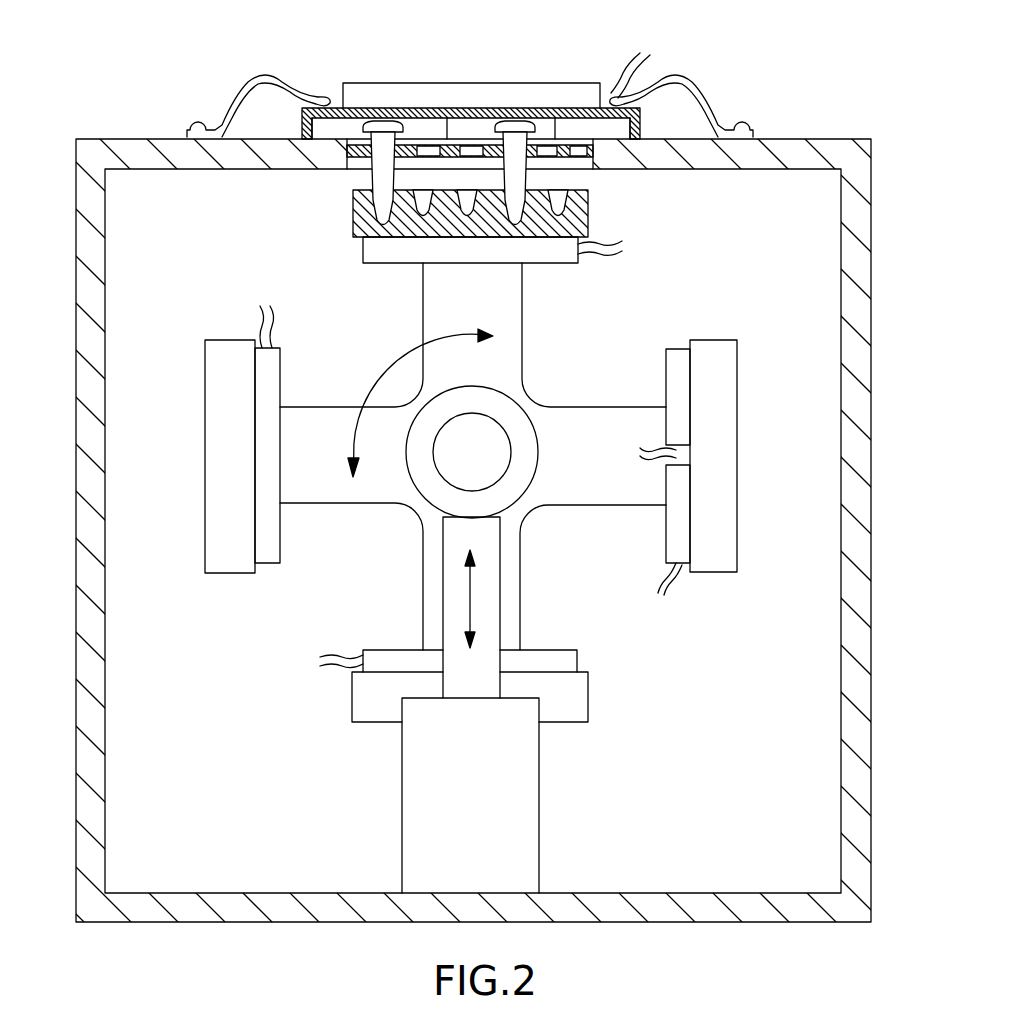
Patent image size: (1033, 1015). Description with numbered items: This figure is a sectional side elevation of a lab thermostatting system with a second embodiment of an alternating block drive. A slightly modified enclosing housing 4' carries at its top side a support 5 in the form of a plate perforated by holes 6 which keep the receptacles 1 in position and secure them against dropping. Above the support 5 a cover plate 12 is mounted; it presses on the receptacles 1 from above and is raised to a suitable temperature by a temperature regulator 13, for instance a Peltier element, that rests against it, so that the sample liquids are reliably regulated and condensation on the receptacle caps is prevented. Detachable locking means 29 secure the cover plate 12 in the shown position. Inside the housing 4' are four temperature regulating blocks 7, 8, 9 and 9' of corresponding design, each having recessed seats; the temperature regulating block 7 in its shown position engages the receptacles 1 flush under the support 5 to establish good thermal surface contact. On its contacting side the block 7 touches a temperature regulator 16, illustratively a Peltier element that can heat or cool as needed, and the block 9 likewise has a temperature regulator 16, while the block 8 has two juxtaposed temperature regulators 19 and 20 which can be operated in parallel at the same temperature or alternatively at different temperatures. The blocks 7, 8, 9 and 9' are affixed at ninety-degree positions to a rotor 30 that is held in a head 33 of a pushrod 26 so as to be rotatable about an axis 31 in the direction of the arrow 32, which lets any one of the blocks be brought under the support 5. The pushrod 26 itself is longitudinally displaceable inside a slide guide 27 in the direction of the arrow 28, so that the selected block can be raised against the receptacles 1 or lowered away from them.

The receptacles 1 is at (380, 172).
The housing 4' is at (473, 530).
The support 5 is at (448, 147).
The holes 6 is at (553, 140).
The temperature regulating block 7 is at (578, 217).
The temperature regulating block 8 is at (710, 353).
The temperature regulating block 9 is at (508, 697).
The temperature regulating block 9' is at (271, 469).
The cover plate 12 is at (497, 105).
The temperature regulator 13 is at (382, 92).
The temperature regulator 16 is at (385, 250).
The temperature regulator 19 is at (672, 377).
The temperature regulator 20 is at (676, 530).
The pushrod 26 is at (487, 618).
The slide guide 27 is at (527, 790).
The arrow 28 is at (475, 587).
The detachable locking means 29 is at (230, 110).
The rotor 30 is at (565, 490).
The axis 31 is at (525, 405).
The arrow 32 is at (410, 357).
The head 33 is at (490, 448).